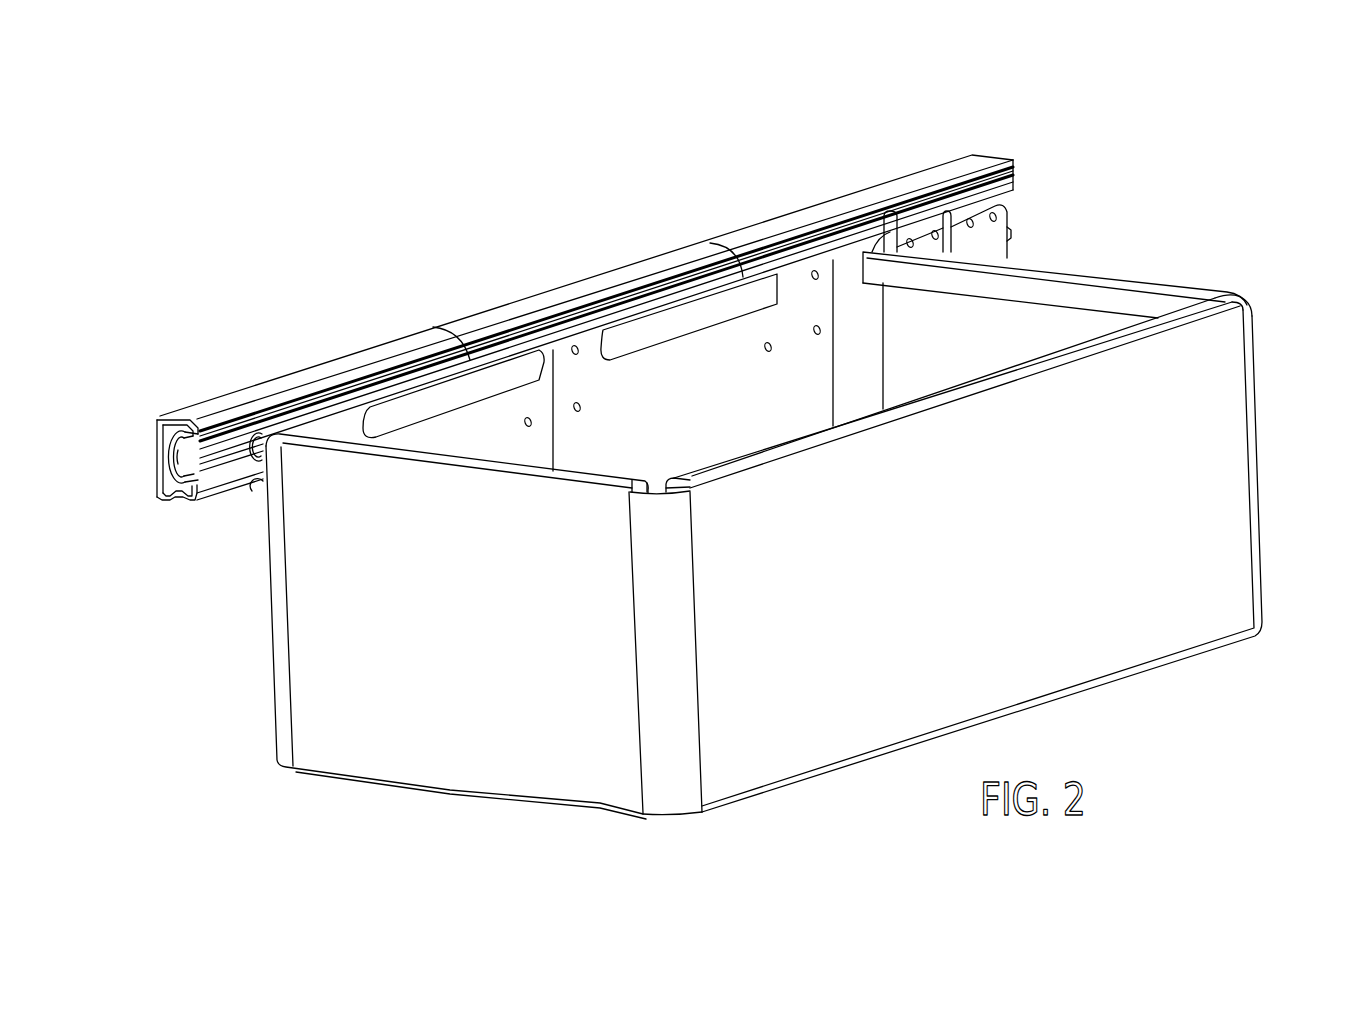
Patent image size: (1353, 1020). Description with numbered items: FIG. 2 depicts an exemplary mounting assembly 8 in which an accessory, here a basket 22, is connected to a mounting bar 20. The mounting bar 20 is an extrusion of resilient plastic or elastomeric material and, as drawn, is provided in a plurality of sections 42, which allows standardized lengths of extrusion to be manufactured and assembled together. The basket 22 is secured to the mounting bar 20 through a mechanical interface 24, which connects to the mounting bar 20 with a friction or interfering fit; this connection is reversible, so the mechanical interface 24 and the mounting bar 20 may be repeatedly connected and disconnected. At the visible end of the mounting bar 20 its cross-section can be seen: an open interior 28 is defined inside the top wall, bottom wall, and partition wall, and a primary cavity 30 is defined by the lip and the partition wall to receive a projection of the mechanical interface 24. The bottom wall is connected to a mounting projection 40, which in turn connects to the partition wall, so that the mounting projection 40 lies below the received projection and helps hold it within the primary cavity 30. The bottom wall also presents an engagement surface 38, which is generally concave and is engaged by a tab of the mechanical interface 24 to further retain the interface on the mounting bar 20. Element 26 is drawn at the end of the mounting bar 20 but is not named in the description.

The mounting assembly 8 is at (994, 126).
The mounting bar 20 is at (637, 270).
The basket 22 is at (1207, 407).
The mechanical interface 24 is at (262, 438).
The channel 26 is at (168, 445).
The open interior 28 is at (176, 420).
The primary cavity 30 is at (190, 459).
The engagement surface 38 is at (180, 503).
The mounting projection 40 is at (197, 494).
The sections 42 is at (356, 360).